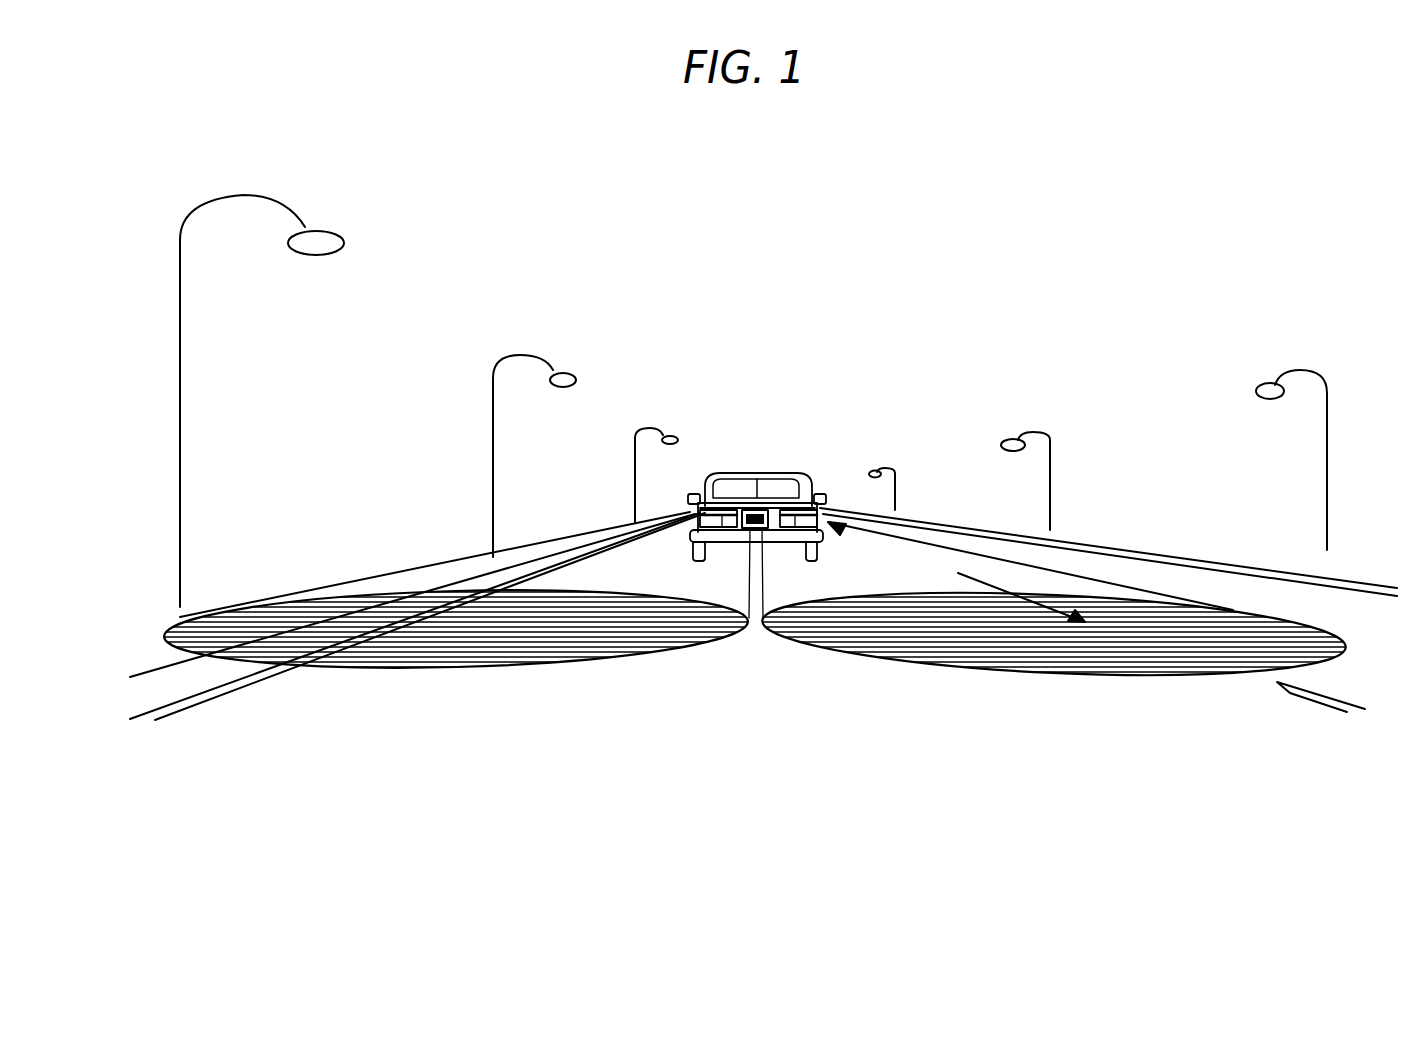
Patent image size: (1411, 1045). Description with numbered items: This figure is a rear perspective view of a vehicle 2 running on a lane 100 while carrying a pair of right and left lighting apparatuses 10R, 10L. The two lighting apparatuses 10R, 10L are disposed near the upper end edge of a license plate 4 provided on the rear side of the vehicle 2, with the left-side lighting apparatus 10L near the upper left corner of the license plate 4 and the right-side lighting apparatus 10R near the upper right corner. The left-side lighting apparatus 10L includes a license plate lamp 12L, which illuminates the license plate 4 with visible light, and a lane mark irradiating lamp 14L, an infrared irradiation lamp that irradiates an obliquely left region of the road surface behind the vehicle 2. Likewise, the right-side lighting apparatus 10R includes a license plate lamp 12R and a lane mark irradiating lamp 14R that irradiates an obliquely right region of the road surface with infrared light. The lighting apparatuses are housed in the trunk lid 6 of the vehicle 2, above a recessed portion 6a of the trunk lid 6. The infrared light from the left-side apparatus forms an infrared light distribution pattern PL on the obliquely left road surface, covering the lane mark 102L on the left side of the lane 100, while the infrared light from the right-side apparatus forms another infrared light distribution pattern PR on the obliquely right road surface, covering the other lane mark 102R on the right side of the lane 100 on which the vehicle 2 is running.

The vehicle 2 is at (765, 483).
The license plate 4 is at (755, 530).
The trunk lid 6 is at (735, 505).
The recessed portion 6a is at (770, 527).
The left-side lighting apparatus 10L is at (662, 423).
The license plate lamp 12L is at (662, 423).
The lane mark irradiating lamp 14L is at (742, 498).
The right-side lighting apparatus 10R is at (860, 423).
The license plate lamp 12R is at (860, 423).
The lane mark irradiating lamp 14R is at (772, 497).
The lane 100 is at (633, 567).
The lane mark 102L is at (193, 703).
The lane mark 102R is at (1287, 690).
The infrared light distribution pattern PL is at (518, 665).
The infrared light distribution pattern PR is at (995, 670).